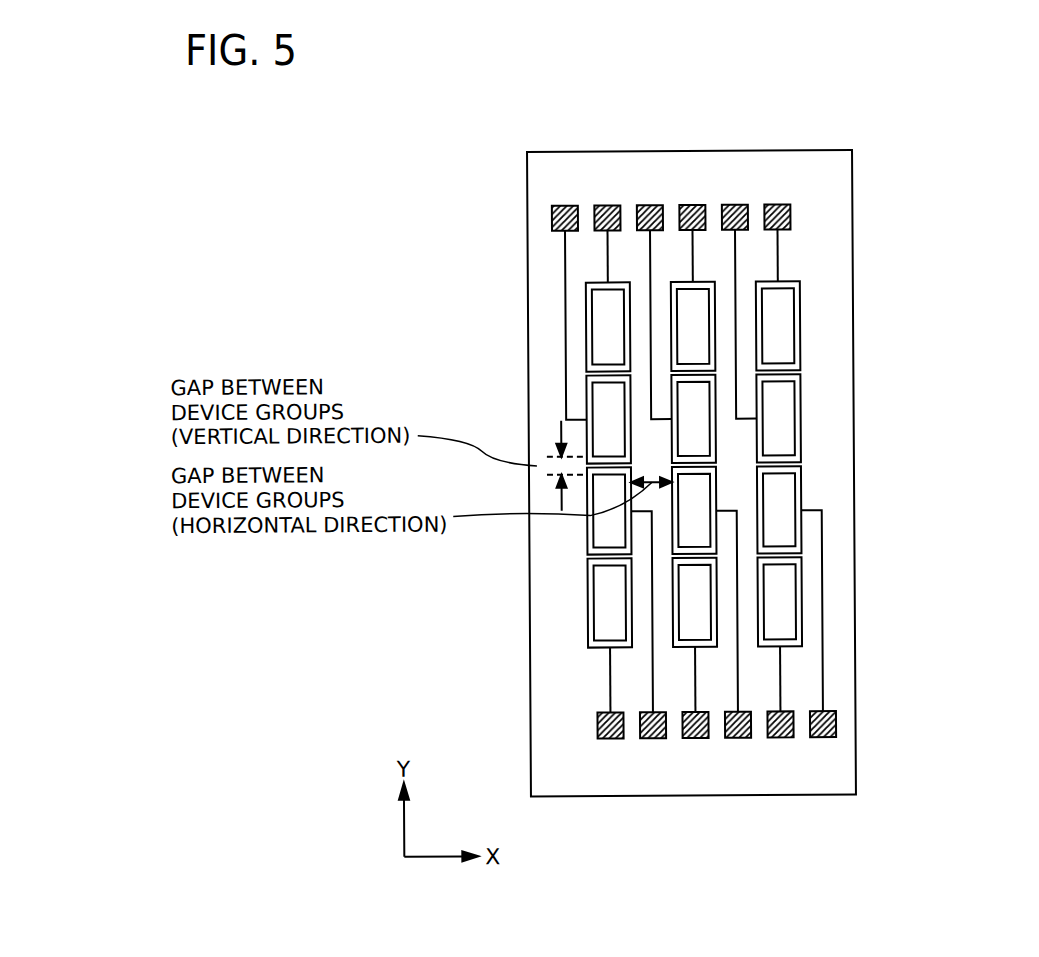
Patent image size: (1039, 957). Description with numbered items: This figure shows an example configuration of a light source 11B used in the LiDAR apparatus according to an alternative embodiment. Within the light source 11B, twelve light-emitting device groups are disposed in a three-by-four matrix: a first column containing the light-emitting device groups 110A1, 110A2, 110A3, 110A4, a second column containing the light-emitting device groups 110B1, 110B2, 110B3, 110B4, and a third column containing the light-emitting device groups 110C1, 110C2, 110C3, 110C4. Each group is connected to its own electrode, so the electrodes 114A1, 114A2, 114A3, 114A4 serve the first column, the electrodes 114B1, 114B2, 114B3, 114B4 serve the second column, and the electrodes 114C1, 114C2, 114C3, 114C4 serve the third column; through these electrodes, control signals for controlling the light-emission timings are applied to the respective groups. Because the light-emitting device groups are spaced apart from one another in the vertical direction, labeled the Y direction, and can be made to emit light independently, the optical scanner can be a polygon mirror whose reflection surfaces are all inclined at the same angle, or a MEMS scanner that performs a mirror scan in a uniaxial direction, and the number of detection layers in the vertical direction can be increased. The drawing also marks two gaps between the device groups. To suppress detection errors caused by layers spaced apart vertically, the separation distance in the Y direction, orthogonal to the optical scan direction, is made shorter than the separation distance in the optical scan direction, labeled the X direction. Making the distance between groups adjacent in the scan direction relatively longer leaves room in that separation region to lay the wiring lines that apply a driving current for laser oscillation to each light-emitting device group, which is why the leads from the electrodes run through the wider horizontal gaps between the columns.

The light source 11B is at (1037, 72).
The light-emitting device group 110A1 is at (597, 343).
The light-emitting device group 110A2 is at (598, 393).
The light-emitting device group 110A3 is at (598, 538).
The light-emitting device group 110A4 is at (600, 586).
The light-emitting device group 110B1 is at (705, 354).
The light-emitting device group 110B2 is at (706, 438).
The light-emitting device group 110B3 is at (707, 487).
The light-emitting device group 110B4 is at (706, 574).
The light-emitting device group 110C1 is at (792, 294).
The light-emitting device group 110C2 is at (792, 388).
The light-emitting device group 110C3 is at (792, 542).
The light-emitting device group 110C4 is at (791, 633).
The electrode 114A1 is at (566, 205).
The electrode 114A2 is at (608, 205).
The electrode 114A3 is at (644, 738).
The electrode 114A4 is at (604, 738).
The electrode 114B1 is at (652, 205).
The electrode 114B2 is at (694, 205).
The electrode 114B3 is at (736, 738).
The electrode 114B4 is at (688, 738).
The electrode 114C1 is at (736, 205).
The electrode 114C2 is at (779, 205).
The electrode 114C3 is at (824, 738).
The electrode 114C4 is at (774, 738).